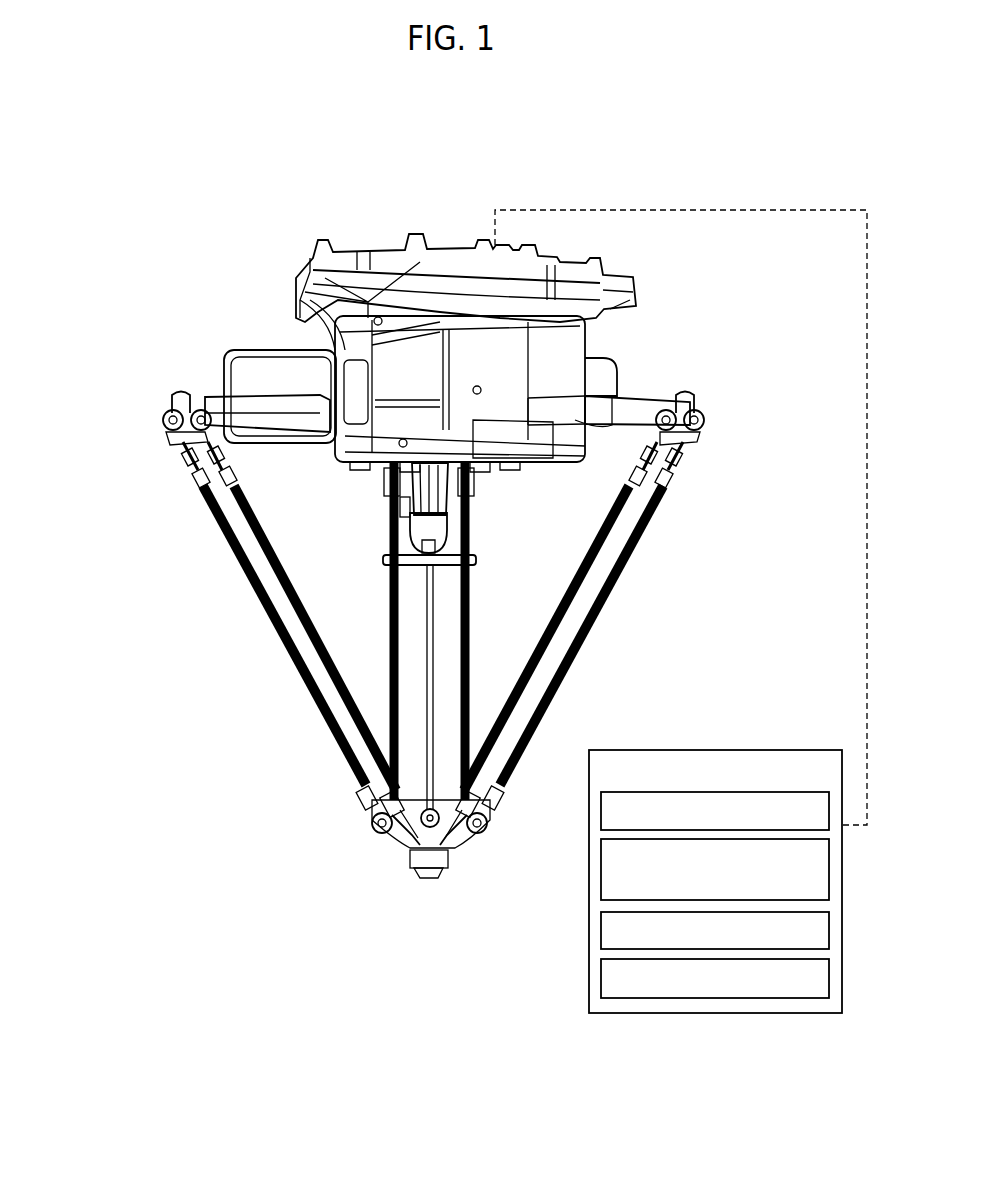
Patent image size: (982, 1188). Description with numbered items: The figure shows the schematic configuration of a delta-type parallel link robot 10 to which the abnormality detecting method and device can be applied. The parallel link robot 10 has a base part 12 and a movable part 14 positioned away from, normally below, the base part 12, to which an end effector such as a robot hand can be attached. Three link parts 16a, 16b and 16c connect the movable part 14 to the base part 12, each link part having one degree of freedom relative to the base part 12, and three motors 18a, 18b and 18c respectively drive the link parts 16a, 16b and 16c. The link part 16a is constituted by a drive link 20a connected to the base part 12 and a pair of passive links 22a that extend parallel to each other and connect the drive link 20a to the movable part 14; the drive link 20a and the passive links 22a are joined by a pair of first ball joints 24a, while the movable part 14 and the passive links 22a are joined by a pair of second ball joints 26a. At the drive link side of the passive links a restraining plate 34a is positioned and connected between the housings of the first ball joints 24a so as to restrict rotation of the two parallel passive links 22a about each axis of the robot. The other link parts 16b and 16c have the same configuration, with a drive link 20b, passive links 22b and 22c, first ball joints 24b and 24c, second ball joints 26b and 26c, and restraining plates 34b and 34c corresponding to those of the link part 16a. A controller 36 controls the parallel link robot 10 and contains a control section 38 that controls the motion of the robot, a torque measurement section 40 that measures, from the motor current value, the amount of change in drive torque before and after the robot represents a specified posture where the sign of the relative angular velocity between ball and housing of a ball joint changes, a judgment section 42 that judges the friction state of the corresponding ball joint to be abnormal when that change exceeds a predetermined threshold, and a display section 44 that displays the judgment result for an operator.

The parallel link robot 10 is at (133, 275).
The base part 12 is at (362, 292).
The movable part 14 is at (432, 860).
The link part 16a is at (180, 535).
The link part 16b is at (634, 590).
The link part 16c is at (487, 606).
The motor 18a is at (493, 372).
The motor 18b is at (602, 393).
The motor 18c is at (275, 372).
The drive link 20a is at (246, 410).
The drive link 20b is at (625, 410).
The passive links 22a is at (333, 681).
The passive links 22b is at (510, 690).
The passive links 22c is at (392, 632).
The first ball joints 24a is at (172, 408).
The first ball joints 24b is at (702, 418).
The first ball joints 24c is at (488, 472).
The second ball joints 26a is at (372, 835).
The second ball joints 26b is at (487, 835).
The second ball joints 26c is at (412, 778).
The restraining plate 34a is at (193, 455).
The restraining plate 34b is at (688, 452).
The restraining plate 34c is at (393, 485).
The controller 36 is at (721, 750).
The control section 38 is at (601, 808).
The torque measurement section 40 is at (601, 858).
The judgment section 42 is at (601, 920).
The display section 44 is at (601, 970).